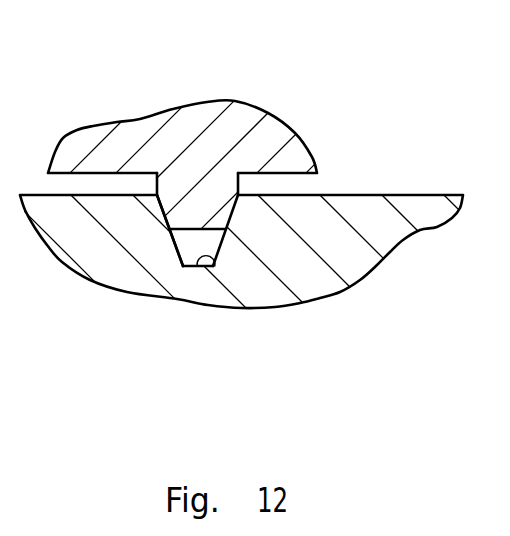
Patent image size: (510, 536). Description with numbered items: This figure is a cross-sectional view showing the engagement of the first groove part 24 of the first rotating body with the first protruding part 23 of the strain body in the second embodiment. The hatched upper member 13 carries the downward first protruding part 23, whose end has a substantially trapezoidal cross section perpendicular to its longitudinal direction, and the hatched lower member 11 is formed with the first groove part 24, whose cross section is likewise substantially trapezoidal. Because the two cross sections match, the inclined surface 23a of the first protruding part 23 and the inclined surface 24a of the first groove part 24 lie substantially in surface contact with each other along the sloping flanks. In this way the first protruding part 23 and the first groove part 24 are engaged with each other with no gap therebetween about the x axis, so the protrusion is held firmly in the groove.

The lower body (base member) 11 is at (358, 270).
The upper body (mounted member) 13 is at (277, 132).
The first protruding part 23 is at (208, 212).
The inclined surface 23a is at (164, 216).
The first groove part 24 is at (215, 267).
The inclined surface 24a is at (183, 231).